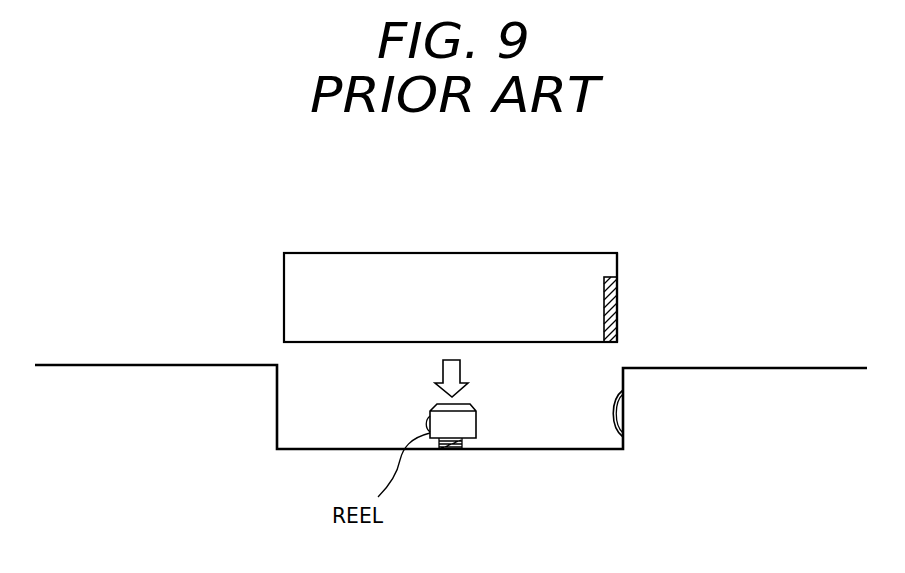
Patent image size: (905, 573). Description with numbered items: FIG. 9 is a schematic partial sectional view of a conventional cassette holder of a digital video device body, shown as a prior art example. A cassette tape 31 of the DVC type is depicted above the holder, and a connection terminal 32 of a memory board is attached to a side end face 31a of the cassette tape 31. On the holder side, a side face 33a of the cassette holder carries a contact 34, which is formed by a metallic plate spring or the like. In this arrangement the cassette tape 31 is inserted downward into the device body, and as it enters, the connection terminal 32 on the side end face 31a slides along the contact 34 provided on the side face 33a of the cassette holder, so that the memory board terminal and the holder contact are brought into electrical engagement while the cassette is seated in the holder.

The cassette tape 31 is at (505, 253).
The side end face 31a is at (618, 268).
The connection terminal 32 is at (611, 301).
The side face 33a is at (620, 392).
The contact 34 is at (616, 413).